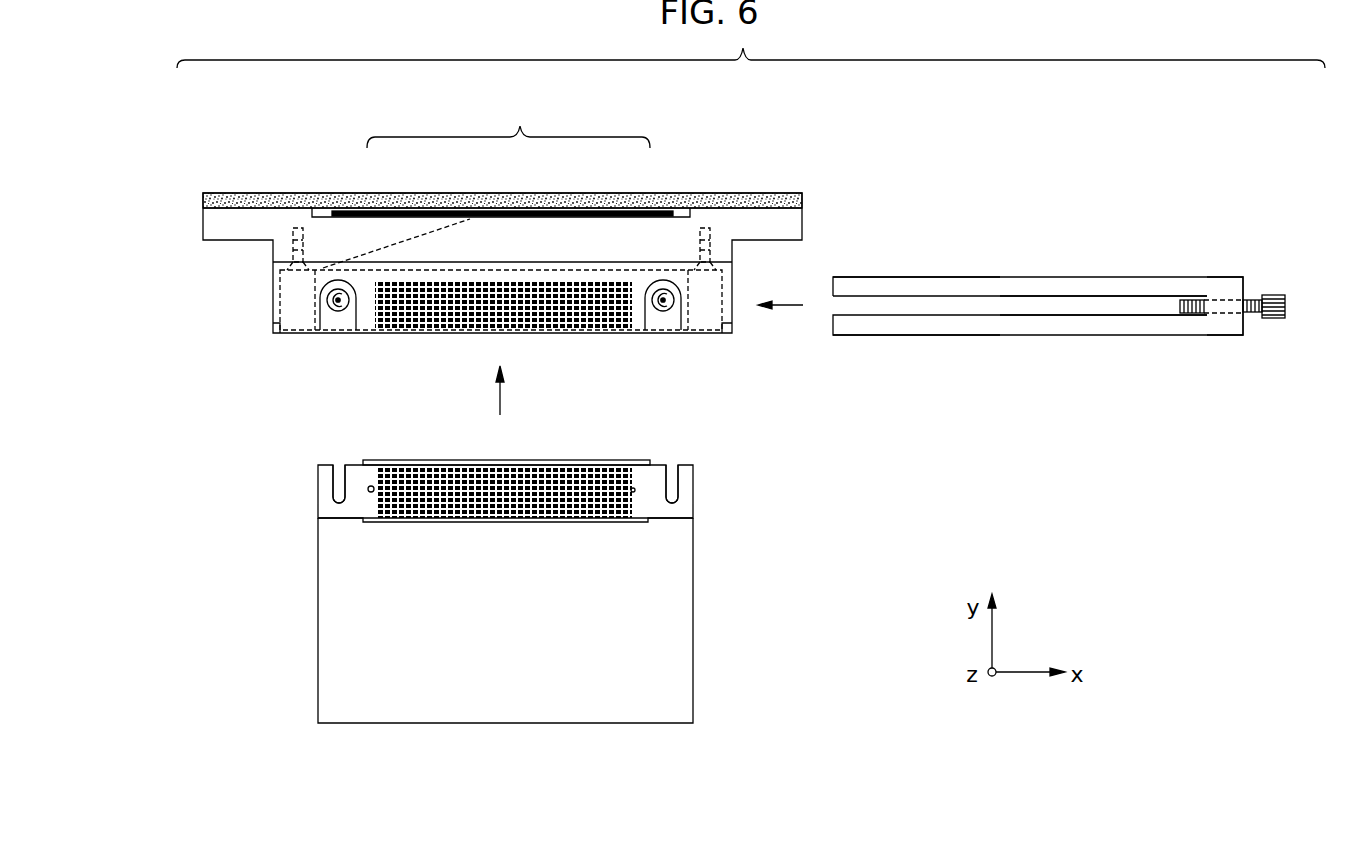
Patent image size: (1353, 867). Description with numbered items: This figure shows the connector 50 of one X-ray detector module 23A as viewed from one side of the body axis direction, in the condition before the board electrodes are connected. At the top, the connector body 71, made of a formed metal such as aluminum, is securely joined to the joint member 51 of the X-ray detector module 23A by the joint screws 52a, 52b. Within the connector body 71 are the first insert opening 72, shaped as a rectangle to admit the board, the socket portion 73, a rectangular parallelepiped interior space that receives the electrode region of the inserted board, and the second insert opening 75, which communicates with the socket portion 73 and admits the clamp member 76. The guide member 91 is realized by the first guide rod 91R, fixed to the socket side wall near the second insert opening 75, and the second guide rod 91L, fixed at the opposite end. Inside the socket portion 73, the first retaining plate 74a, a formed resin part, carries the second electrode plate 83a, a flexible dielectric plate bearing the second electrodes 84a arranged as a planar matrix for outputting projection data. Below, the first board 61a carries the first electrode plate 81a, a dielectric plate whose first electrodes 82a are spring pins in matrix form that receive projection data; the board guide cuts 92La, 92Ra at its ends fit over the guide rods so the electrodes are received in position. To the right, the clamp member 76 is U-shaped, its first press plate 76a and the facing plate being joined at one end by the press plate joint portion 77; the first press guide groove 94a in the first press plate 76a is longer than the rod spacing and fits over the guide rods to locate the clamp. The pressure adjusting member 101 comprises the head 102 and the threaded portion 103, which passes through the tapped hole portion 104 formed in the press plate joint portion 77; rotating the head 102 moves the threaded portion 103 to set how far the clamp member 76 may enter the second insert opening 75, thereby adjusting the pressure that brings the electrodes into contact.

The connector 50 is at (755, 424).
The joint member 51 is at (530, 212).
The X-ray detector module 23A is at (785, 194).
The guide member 91 is at (500, 201).
The second guide rod 91L is at (340, 292).
The first guide rod 91R is at (662, 292).
The joint screw 52a is at (708, 228).
The joint screw 52b is at (297, 228).
The connector body 71 is at (495, 300).
The first insert opening 72 is at (276, 336).
The socket portion 73 is at (299, 336).
The second insert opening 75 is at (734, 315).
The second electrode plate 83a is at (366, 318).
The first retaining plate 74a is at (637, 318).
The second electrode 84a is at (516, 322).
The clamp member 76 is at (1045, 260).
The first press plate 76a is at (922, 327).
The first press guide groove 94a is at (1022, 312).
The press plate joint portion 77 is at (1228, 290).
The threaded portion 103 is at (1192, 300).
The tapped hole portion 104 is at (1221, 313).
The pressure adjusting member 101 is at (1257, 330).
The head 102 is at (1272, 297).
The first board 61a is at (531, 568).
The board guide cut 92La is at (338, 480).
The board guide cut 92Ra is at (676, 478).
The first electrode plate 81a is at (369, 477).
The first electrode 82a is at (560, 468).